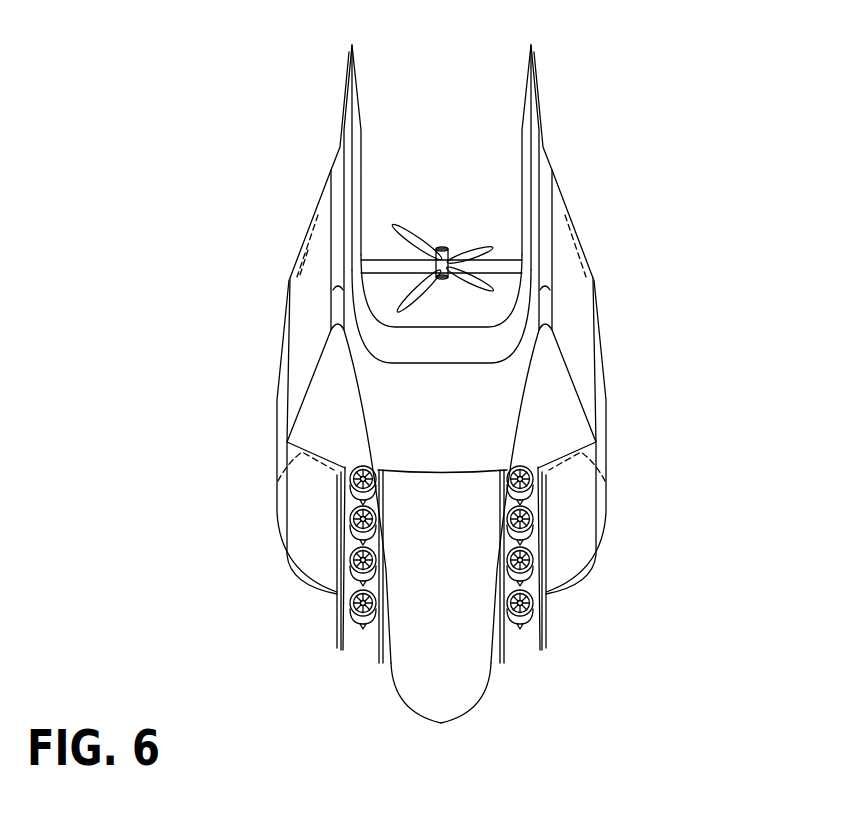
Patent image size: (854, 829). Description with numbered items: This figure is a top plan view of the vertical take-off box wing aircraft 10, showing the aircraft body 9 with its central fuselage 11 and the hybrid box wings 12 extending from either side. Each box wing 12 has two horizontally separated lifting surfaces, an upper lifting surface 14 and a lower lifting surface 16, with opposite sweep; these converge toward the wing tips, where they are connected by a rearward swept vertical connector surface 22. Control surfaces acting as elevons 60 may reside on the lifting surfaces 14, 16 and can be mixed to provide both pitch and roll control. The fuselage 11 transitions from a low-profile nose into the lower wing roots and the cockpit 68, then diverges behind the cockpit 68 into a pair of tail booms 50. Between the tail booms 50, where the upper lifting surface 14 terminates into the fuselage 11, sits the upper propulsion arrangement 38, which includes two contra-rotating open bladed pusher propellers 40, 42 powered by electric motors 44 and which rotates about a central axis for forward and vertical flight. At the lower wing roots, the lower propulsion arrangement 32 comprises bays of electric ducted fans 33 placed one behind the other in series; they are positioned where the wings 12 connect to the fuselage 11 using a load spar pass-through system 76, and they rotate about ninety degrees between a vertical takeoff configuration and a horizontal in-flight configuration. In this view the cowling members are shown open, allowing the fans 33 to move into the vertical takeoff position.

The aircraft 10 is at (148, 208).
The aircraft body 9 is at (357, 395).
The fuselage 11 is at (393, 438).
The hybrid box wings 12 is at (608, 321).
The upper lifting surface 14 is at (590, 267).
The lower lifting surface 16 is at (572, 527).
The vertical connector surface 22 is at (608, 438).
The lower propulsion arrangement 32 is at (362, 645).
The electric ducted fans 33 is at (352, 488).
The upper propulsion arrangement 38 is at (447, 228).
The pusher propeller 40 is at (409, 243).
The pusher propeller 42 is at (442, 280).
The electric motors 44 is at (442, 280).
The tail booms 50 is at (537, 125).
The elevons 60 is at (316, 217).
The cockpit 68 is at (447, 640).
The load spar pass-through system 76 is at (557, 637).